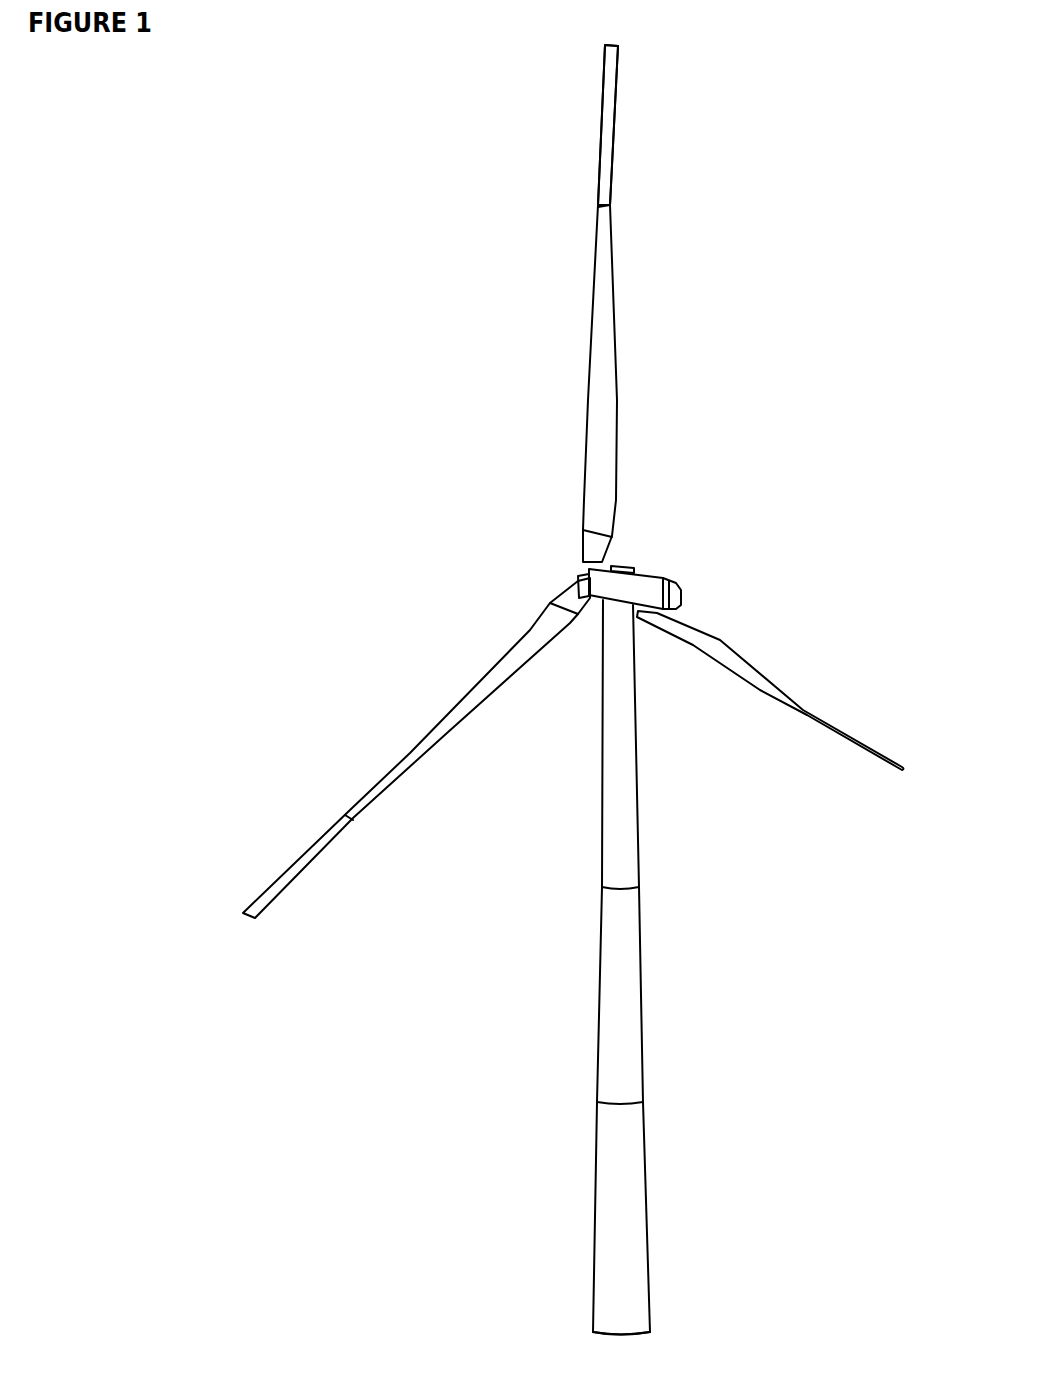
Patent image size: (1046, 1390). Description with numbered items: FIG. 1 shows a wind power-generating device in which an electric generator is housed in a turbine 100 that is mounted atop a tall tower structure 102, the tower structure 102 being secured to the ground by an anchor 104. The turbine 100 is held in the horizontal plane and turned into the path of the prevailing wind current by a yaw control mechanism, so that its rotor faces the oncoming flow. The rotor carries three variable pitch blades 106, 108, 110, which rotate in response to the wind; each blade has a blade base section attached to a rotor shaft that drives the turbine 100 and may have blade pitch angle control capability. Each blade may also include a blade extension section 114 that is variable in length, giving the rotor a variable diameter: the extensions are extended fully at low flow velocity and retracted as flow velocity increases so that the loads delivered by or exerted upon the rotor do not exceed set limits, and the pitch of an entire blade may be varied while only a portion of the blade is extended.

The turbine 100 is at (628, 600).
The tower structure 102 is at (617, 808).
The anchor 104 is at (595, 1330).
The variable pitch blade 106 is at (678, 633).
The variable pitch blade 108 is at (523, 632).
The variable pitch blade 110 is at (593, 325).
The blade extension section 114 is at (607, 110).